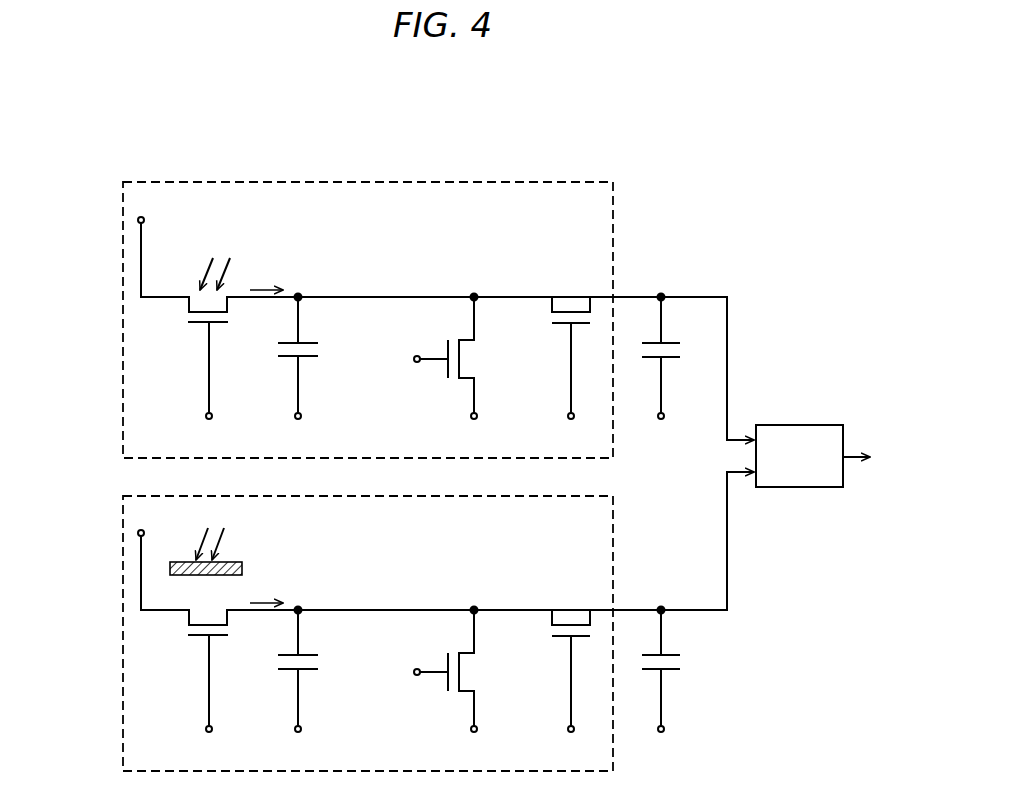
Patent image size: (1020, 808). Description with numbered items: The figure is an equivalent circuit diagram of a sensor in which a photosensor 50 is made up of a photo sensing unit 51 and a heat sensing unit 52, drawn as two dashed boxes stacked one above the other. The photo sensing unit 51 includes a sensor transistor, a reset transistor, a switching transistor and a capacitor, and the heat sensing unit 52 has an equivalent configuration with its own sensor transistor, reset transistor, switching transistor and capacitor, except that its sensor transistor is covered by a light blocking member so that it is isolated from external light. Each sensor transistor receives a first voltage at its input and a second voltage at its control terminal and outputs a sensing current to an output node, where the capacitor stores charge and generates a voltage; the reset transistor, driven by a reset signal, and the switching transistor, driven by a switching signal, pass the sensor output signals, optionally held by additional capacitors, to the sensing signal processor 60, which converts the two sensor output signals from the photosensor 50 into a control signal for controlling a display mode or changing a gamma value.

The photosensor 50 is at (72, 445).
The photo sensing unit 51 is at (123, 458).
The heat sensing unit 52 is at (123, 508).
The sensing signal processor 60 is at (837, 456).